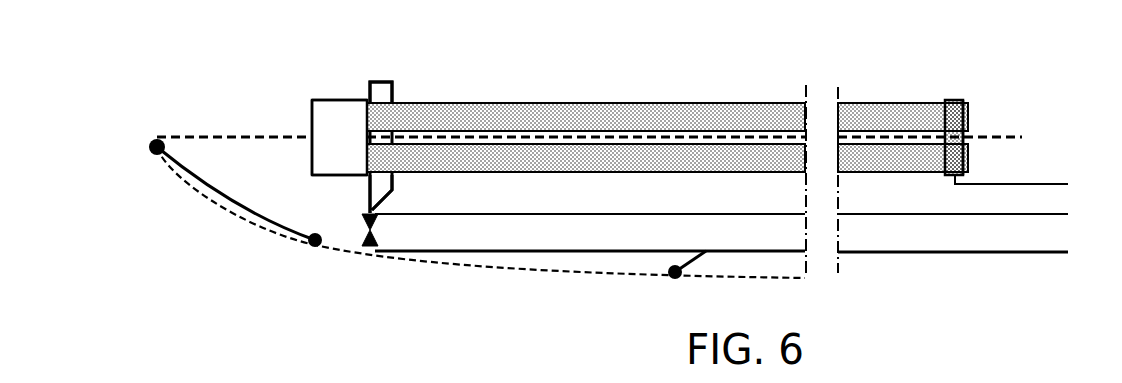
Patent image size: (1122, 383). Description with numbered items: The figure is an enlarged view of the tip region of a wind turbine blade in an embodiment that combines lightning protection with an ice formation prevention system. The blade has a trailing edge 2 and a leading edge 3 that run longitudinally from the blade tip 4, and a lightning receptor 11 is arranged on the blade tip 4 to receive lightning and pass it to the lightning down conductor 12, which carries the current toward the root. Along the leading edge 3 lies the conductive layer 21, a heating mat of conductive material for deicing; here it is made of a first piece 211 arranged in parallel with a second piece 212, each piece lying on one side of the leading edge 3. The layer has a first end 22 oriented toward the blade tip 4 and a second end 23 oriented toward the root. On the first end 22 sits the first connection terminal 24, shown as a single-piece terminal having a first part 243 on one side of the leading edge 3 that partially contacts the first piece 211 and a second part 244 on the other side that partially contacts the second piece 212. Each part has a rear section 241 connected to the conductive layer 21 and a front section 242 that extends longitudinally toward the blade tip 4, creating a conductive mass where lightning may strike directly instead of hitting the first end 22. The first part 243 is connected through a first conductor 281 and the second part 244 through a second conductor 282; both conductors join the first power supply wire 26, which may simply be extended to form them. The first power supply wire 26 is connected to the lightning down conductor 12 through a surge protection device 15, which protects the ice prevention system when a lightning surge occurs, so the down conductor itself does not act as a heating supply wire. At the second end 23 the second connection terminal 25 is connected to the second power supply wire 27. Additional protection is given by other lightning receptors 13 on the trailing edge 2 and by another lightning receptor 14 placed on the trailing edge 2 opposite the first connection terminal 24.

The trailing edge 2 is at (450, 263).
The leading edge 3 is at (228, 135).
The blade tip 4 is at (150, 143).
The lightning receptor 11 is at (148, 149).
The lightning down conductor 12 is at (565, 251).
The other lightning receptors 13 is at (673, 279).
The another lightning receptor 14 is at (312, 248).
The surge protection device 15 is at (368, 238).
The conductive layer 21 is at (553, 118).
The first end 22 is at (392, 95).
The second end 23 is at (970, 128).
The first connection terminal 24 is at (347, 110).
The second connection terminal 25 is at (958, 102).
The first power supply wire 26 is at (630, 215).
The second power supply wire 27 is at (1020, 184).
The first piece 211 is at (662, 113).
The second piece 212 is at (720, 165).
The rear section 241 is at (377, 118).
The front section 242 is at (330, 118).
The first part 243 is at (327, 100).
The second part 244 is at (333, 177).
The first conductor 281 is at (383, 80).
The second conductor 282 is at (365, 188).